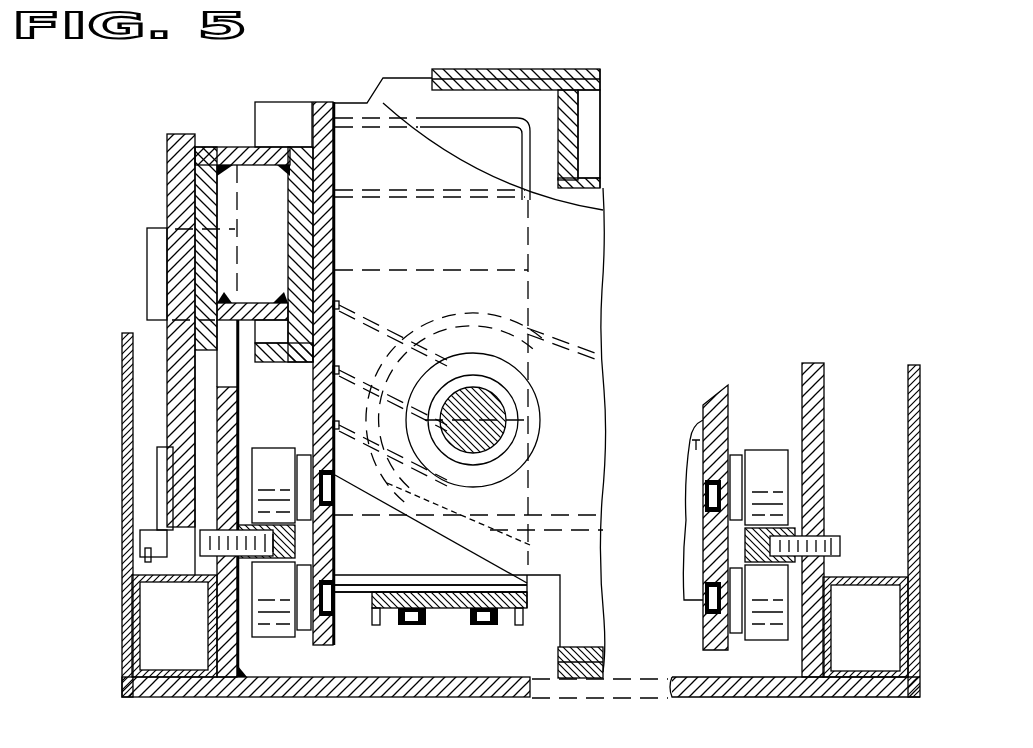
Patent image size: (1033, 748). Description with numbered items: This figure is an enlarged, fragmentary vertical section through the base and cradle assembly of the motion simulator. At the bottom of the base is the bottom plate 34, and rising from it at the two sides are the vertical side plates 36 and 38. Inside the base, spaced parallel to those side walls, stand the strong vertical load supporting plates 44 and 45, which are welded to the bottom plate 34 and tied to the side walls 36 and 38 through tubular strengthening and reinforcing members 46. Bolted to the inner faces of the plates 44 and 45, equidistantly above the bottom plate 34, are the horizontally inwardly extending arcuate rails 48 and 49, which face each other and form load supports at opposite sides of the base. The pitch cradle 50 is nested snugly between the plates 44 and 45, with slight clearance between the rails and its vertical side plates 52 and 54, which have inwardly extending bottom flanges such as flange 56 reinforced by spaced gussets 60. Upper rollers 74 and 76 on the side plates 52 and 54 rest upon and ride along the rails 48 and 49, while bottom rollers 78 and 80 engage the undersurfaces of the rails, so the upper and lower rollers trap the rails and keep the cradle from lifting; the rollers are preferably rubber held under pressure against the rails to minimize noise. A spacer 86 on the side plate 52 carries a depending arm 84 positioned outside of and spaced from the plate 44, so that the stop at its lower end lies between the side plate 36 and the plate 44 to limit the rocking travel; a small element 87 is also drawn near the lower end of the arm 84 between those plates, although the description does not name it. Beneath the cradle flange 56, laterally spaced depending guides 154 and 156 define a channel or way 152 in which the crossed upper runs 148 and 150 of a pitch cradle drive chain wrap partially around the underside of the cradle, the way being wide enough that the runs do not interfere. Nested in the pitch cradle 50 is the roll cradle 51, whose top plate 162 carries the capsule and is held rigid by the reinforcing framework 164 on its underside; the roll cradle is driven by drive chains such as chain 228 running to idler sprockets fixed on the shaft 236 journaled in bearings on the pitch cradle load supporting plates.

The bottom plate 34 is at (340, 680).
The side plate 36 is at (123, 455).
The side plate 38 is at (908, 413).
The load supporting plate 44 is at (243, 402).
The load supporting plate 45 is at (812, 365).
The tubular strengthening and reinforcing member 46 is at (160, 582).
The rail 48 is at (305, 548).
The rail 49 is at (822, 512).
The pitch cradle 50 is at (345, 95).
The roll cradle 51 is at (548, 58).
The side plate 52 is at (333, 228).
The side plate 54 is at (718, 388).
The bottom flange 56 is at (527, 598).
The gusset 60 is at (385, 330).
The roller 74 is at (272, 450).
The roller 76 is at (757, 452).
The roller 78 is at (290, 640).
The roller 80 is at (762, 635).
The arm 84 is at (180, 380).
The spacer 86 is at (232, 148).
The adjusting screw 87 is at (150, 548).
The upper chain run 148 is at (410, 625).
The upper chain run 150 is at (482, 625).
The way 152 is at (448, 618).
The depending guide 154 is at (373, 622).
The depending guide 156 is at (515, 620).
The top plate 162 is at (462, 70).
The reinforcing framework 164 is at (583, 118).
The drive chain 228 is at (572, 515).
The shaft 236 is at (500, 425).